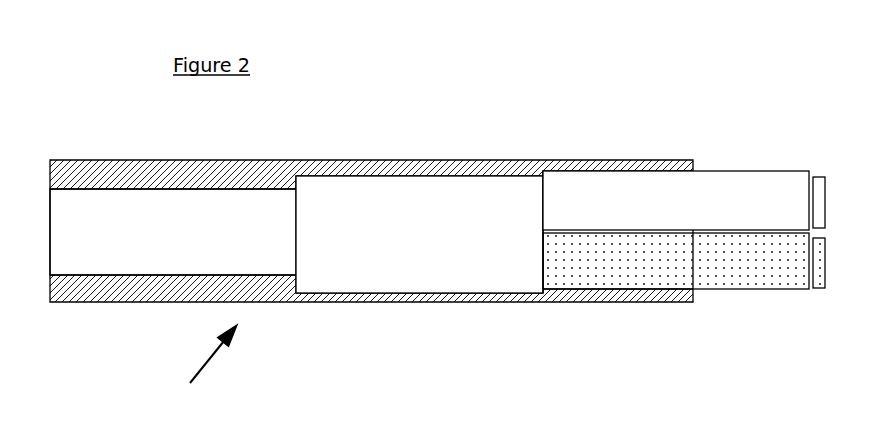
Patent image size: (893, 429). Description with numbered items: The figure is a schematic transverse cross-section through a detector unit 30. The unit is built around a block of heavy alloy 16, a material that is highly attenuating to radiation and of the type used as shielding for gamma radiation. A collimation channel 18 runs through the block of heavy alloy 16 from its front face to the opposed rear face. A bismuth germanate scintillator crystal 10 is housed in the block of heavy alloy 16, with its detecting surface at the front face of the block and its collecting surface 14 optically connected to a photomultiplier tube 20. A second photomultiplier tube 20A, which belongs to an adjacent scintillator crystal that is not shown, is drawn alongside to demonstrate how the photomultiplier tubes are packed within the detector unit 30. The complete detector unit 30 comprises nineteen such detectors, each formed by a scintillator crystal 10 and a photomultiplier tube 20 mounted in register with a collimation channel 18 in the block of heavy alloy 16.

The bismuth germanate (BGO) scintillator crystal 10 is at (419, 234).
The collecting surface 14 is at (540, 207).
The block of heavy alloy 16 is at (145, 168).
The collimation channel 18 is at (82, 225).
The photomultiplier tube (PMT) 20 is at (753, 183).
The photomultiplier tube (PMT) 20A is at (777, 280).
The detector unit 30 is at (199, 367).